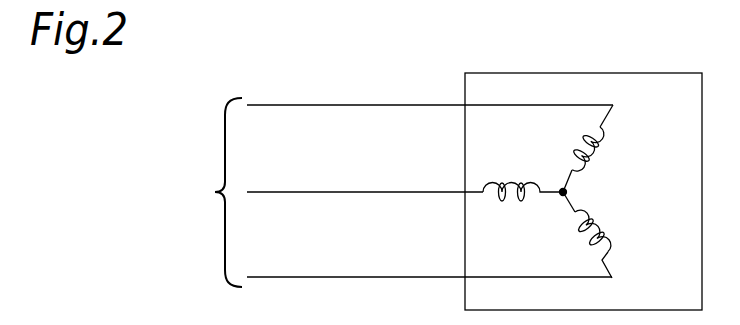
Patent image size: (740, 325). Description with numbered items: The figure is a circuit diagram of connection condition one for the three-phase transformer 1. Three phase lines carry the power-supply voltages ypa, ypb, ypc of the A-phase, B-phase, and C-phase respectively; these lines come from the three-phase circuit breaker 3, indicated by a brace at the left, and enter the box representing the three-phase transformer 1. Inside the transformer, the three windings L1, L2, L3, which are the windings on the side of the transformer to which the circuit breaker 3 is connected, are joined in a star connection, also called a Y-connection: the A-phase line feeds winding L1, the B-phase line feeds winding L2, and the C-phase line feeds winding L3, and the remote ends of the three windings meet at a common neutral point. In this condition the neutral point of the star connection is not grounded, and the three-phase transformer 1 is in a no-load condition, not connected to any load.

The three-phase transformer 1 is at (513, 73).
The three-phase circuit breaker 3 is at (123, 192).
The power-supply voltage of A-phase ypa is at (323, 105).
The power-supply voltage of B-phase ypb is at (323, 192).
The power-supply voltage of C-phase ypc is at (323, 277).
The winding L1 is at (594, 140).
The winding L2 is at (523, 174).
The winding L3 is at (610, 251).